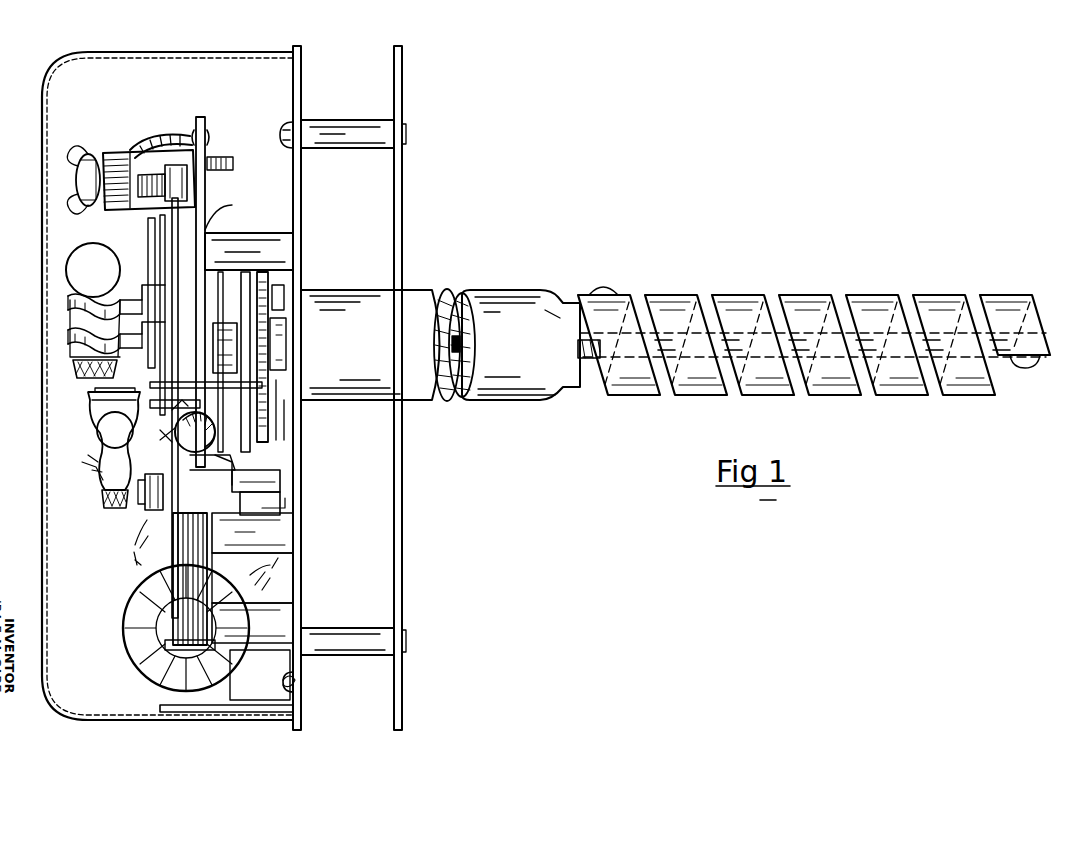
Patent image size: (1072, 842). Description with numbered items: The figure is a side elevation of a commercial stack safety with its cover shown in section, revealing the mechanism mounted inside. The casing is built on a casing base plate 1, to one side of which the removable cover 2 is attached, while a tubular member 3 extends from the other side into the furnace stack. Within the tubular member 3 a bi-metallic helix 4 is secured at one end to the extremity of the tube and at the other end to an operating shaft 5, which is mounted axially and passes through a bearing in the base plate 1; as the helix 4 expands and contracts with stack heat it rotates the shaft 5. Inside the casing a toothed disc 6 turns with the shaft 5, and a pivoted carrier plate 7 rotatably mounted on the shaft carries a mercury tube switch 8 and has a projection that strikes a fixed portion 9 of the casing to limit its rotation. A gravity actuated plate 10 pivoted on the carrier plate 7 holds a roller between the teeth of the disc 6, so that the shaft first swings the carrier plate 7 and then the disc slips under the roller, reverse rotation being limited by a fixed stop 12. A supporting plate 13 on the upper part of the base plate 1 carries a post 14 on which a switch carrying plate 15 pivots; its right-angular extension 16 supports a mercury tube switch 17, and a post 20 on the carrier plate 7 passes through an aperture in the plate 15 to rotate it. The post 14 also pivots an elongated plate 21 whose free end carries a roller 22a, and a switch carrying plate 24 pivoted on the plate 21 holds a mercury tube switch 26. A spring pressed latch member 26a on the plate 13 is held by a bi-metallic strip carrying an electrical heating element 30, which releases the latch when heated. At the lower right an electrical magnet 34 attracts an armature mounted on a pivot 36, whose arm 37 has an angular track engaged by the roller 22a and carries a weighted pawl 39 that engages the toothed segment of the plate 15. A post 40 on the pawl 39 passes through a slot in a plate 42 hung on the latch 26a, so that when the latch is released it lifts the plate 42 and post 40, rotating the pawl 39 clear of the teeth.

The casing base plate 1 is at (302, 178).
The removable cover 2 is at (134, 722).
The tubular member 3 is at (505, 312).
The bi-metallic helix 4 is at (872, 306).
The operating shaft 5 is at (589, 358).
The toothed disc 6 is at (262, 418).
The pivoted carrier plate 7 is at (236, 402).
The mercury tube switch 8 is at (242, 474).
The fixed portion of the casing 9 is at (272, 243).
The gravity actuated plate 10 is at (255, 447).
The fixed stop 12 is at (268, 510).
The supporting plate 13 is at (206, 186).
The post 14 is at (205, 328).
The switch carrying plate 15 is at (180, 390).
The right-angular extension 16 is at (90, 406).
The mercury tube switch 17 is at (120, 460).
The post 20 is at (93, 370).
The elongated plate 21 is at (153, 400).
The roller 22a is at (70, 303).
The switch carrying plate 24 is at (70, 324).
The mercury tube switch 26 is at (72, 262).
The spring pressed latch member 26a is at (162, 233).
The electrical heating element 30 is at (127, 168).
The electrical magnet 34 is at (140, 607).
The pivot 36 is at (148, 497).
The arm 37 is at (170, 527).
The weighted pawl 39 is at (207, 232).
The post 40 is at (170, 262).
The plate 42 is at (159, 248).